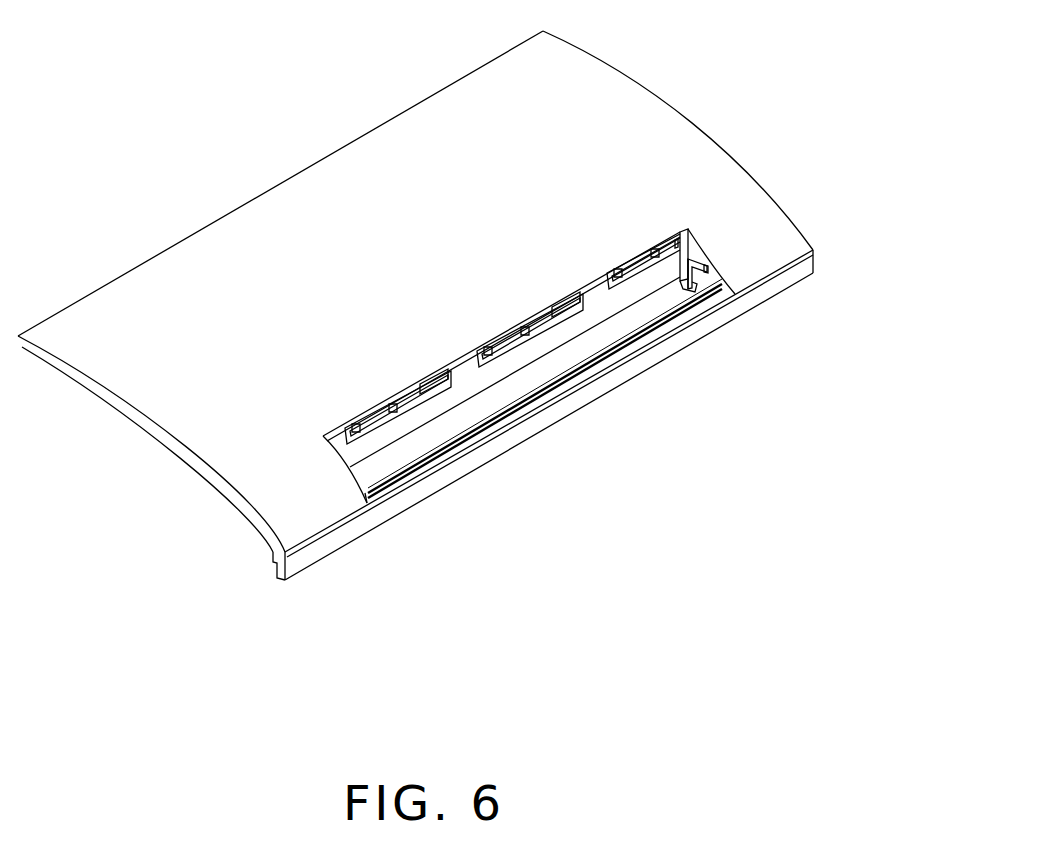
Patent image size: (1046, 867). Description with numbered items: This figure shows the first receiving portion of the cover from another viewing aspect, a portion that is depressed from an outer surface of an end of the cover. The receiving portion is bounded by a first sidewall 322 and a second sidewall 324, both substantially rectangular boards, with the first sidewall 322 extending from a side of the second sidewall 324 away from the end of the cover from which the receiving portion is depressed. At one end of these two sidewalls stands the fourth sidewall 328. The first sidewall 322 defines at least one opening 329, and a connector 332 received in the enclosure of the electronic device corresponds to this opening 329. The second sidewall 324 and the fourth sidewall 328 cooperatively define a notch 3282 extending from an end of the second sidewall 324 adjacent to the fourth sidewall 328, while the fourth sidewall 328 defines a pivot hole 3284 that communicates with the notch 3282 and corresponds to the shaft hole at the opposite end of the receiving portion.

The first sidewall 322 is at (463, 385).
The second sidewall 324 is at (562, 365).
The fourth sidewall 328 is at (690, 256).
The notch 3282 is at (735, 294).
The pivot hole 3284 is at (708, 271).
The opening 329 is at (680, 232).
The connector 332 is at (630, 272).